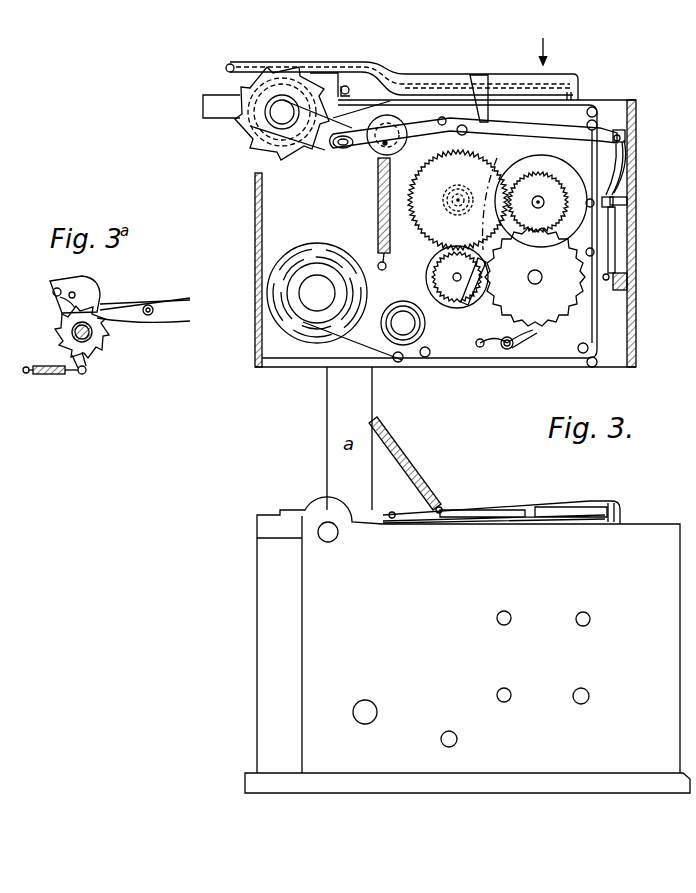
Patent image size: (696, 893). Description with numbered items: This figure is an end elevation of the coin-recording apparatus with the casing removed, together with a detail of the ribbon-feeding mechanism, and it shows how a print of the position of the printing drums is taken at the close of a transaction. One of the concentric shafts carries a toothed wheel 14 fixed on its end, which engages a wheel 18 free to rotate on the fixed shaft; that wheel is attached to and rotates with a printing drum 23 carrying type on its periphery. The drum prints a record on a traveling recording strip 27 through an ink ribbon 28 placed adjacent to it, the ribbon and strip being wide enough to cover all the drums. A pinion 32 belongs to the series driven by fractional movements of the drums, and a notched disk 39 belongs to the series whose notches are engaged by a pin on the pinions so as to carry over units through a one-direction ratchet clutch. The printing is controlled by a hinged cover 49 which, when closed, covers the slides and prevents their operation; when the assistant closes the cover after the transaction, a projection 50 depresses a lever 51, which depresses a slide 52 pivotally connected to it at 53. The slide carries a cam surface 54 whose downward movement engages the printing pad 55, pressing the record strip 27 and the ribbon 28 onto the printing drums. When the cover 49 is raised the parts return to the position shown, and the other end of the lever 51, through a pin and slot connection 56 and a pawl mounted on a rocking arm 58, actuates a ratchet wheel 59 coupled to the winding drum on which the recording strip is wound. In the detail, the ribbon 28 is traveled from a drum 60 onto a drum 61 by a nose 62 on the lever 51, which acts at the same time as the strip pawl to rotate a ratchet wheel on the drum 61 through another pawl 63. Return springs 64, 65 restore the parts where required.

In FIG. 3, the toothed wheel 14 is at (458, 200).
In FIG. 3, the wheel 18 is at (552, 214).
In FIG. 3, the printing drum 23 is at (541, 200).
In FIG. 3, the recording strip 27 is at (597, 237).
In FIG. 3, the ink ribbon 28 is at (592, 255).
In FIG. 3A, the ink ribbon 28 is at (120, 307).
In FIG. 3, the pinion 32 is at (456, 304).
In FIG. 3, the notched disk 39 is at (530, 288).
In FIG. 3, the hinged cover 49 is at (450, 72).
In FIG. 3, the projection 50 is at (487, 85).
In FIG. 3, the lever 51 is at (511, 127).
In FIG. 3A, the lever 51 is at (181, 312).
In FIG. 3, the slide 52 is at (619, 172).
In FIG. 3, the pivotal connection 53 is at (626, 140).
In FIG. 3, the cam surface 54 is at (322, 150).
In FIG. 3, the printing pad 55 is at (614, 210).
In FIG. 3, the pin and slot connection 56 is at (345, 148).
In FIG. 3, the rocking arm 58 is at (300, 152).
In FIG. 3, the ratchet wheel 59 is at (252, 147).
In FIG. 3, the drum 60 is at (403, 312).
In FIG. 3, the drum 61 is at (380, 152).
In FIG. 3A, the drum 61 is at (105, 347).
In FIG. 3A, the nose 62 is at (100, 297).
In FIG. 3A, the pawl 63 is at (55, 298).
In FIG. 3, the return spring 64 is at (378, 234).
In FIG. 3A, the return spring 65 is at (60, 374).